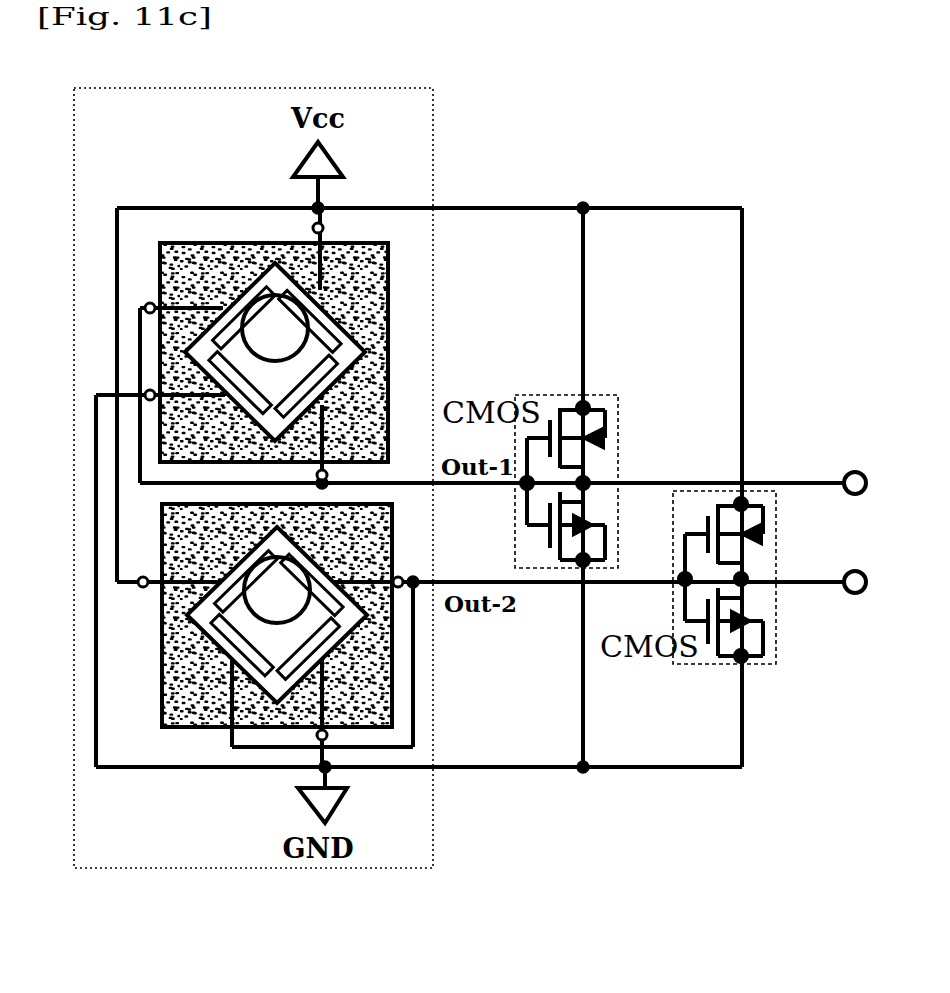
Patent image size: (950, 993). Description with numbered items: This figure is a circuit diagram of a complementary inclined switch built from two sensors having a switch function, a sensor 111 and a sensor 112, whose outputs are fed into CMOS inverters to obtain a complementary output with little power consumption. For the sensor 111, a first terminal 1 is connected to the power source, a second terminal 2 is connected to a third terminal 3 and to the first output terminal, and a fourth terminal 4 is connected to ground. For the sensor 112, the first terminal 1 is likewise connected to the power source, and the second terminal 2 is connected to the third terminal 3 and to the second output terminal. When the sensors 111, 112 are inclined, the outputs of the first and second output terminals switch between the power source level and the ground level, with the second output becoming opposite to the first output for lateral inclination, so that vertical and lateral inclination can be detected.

The sensor having the switch function 111 is at (388, 285).
The sensor having the switch function 112 is at (392, 530).
The first terminal 1 is at (243, 421).
The second terminal 2 is at (366, 524).
The third terminal 3 is at (179, 515).
The fourth terminal 4 is at (242, 560).